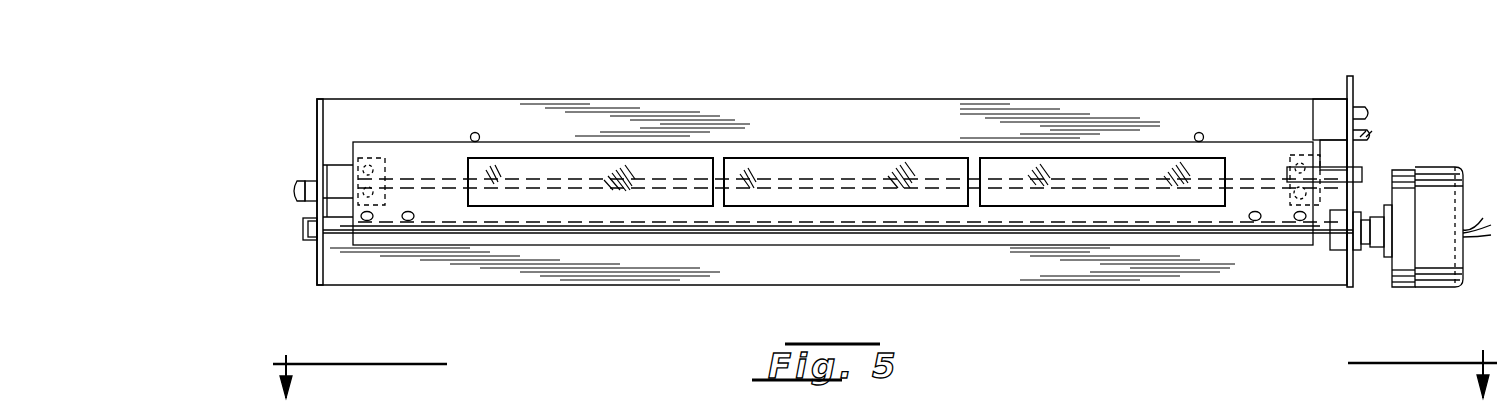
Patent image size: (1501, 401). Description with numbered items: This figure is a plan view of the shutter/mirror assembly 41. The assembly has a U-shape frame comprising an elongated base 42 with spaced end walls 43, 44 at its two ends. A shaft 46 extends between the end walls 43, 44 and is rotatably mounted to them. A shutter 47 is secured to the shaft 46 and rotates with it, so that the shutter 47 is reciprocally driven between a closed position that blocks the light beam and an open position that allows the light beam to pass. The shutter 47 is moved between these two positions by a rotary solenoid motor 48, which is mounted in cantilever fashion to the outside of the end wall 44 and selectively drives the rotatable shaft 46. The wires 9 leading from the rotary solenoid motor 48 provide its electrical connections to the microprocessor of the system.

The shutter/mirror assembly 41 is at (1088, 90).
The base 42 is at (834, 132).
The end wall 43 is at (316, 262).
The end wall 44 is at (1355, 272).
The shaft 46 is at (355, 235).
The shutter 47 is at (418, 150).
The rotary solenoid motor 48 is at (1442, 276).
The wires 9 is at (1486, 232).